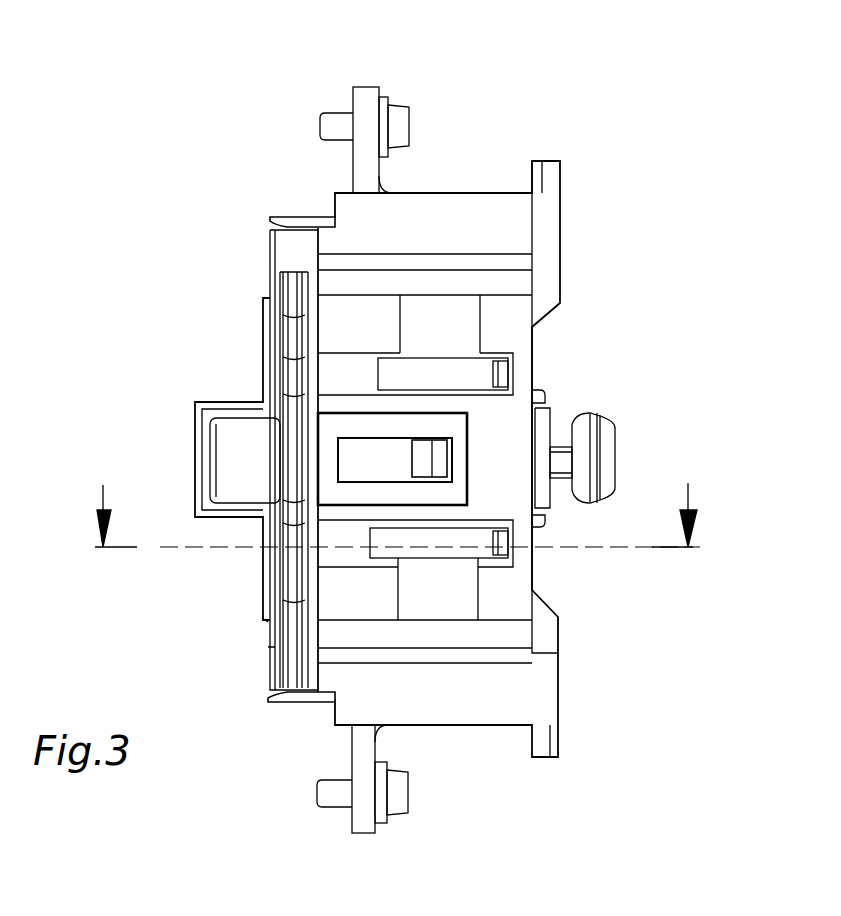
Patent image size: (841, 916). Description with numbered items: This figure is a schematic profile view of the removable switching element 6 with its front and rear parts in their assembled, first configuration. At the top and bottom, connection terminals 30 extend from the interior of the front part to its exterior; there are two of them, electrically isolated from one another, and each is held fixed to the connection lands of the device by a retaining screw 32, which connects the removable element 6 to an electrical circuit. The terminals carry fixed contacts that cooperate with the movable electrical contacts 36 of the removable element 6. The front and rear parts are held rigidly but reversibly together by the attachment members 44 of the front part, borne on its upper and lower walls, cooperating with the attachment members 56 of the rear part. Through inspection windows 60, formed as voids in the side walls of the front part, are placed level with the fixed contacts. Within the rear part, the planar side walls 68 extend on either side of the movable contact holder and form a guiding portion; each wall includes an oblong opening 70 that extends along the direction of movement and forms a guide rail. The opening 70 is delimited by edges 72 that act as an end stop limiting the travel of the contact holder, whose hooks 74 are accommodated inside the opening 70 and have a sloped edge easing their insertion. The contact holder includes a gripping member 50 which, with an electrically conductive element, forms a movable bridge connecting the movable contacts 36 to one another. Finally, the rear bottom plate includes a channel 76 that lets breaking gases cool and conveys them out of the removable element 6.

The removable element 6 is at (645, 116).
The connection terminals 30 is at (366, 95).
The retaining screws 32 is at (400, 123).
The movable electrical contacts 36 is at (500, 502).
The attachment members 44 is at (257, 430).
The attachment members 56 is at (292, 212).
The gripping member 50 is at (590, 442).
The inspection windows 60 is at (453, 333).
The side walls 68 is at (372, 428).
The oblong opening 70 is at (392, 461).
The edges 72 is at (467, 468).
The hooks 74 is at (433, 457).
The channel 76 is at (252, 478).